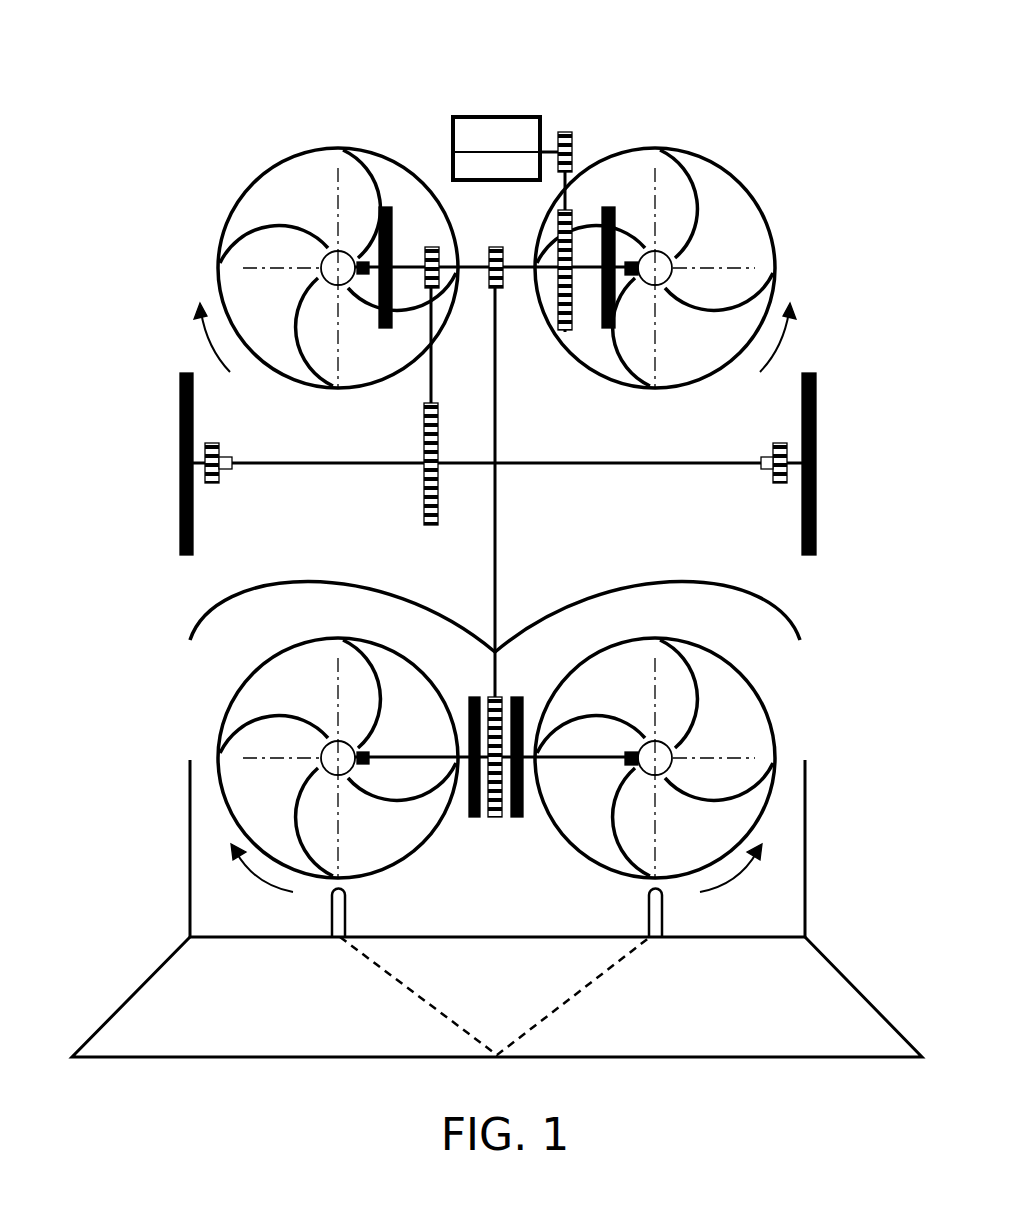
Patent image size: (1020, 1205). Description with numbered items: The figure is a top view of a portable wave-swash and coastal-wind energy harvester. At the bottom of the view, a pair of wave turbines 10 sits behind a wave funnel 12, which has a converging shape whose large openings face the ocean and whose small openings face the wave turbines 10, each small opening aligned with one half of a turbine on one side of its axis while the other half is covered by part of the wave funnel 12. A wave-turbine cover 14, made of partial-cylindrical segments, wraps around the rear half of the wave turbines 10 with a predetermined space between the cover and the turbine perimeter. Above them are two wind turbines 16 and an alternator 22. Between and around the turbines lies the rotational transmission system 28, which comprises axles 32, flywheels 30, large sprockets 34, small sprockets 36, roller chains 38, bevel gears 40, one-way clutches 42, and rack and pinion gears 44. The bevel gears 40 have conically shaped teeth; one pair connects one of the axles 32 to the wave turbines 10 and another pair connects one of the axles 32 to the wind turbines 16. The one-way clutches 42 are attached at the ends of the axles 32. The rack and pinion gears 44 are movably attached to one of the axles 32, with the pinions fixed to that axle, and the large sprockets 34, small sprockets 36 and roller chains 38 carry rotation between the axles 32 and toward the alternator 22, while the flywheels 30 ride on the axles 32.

The wave turbines 10 is at (247, 675).
The wave funnel 12 is at (136, 979).
The wave-turbine cover 14 is at (774, 612).
The wind turbines 16 is at (248, 187).
The alternator 22 is at (497, 117).
The rotational transmission system 28 is at (346, 488).
The flywheels 30 is at (392, 226).
The axles 32 is at (554, 148).
The large sprockets 34 is at (565, 332).
The small sprockets 36 is at (565, 132).
The roller chains 38 is at (567, 197).
The bevel gears 40 is at (322, 258).
The one-way clutches 42 is at (357, 258).
The rack and pinion gears 44 is at (215, 443).